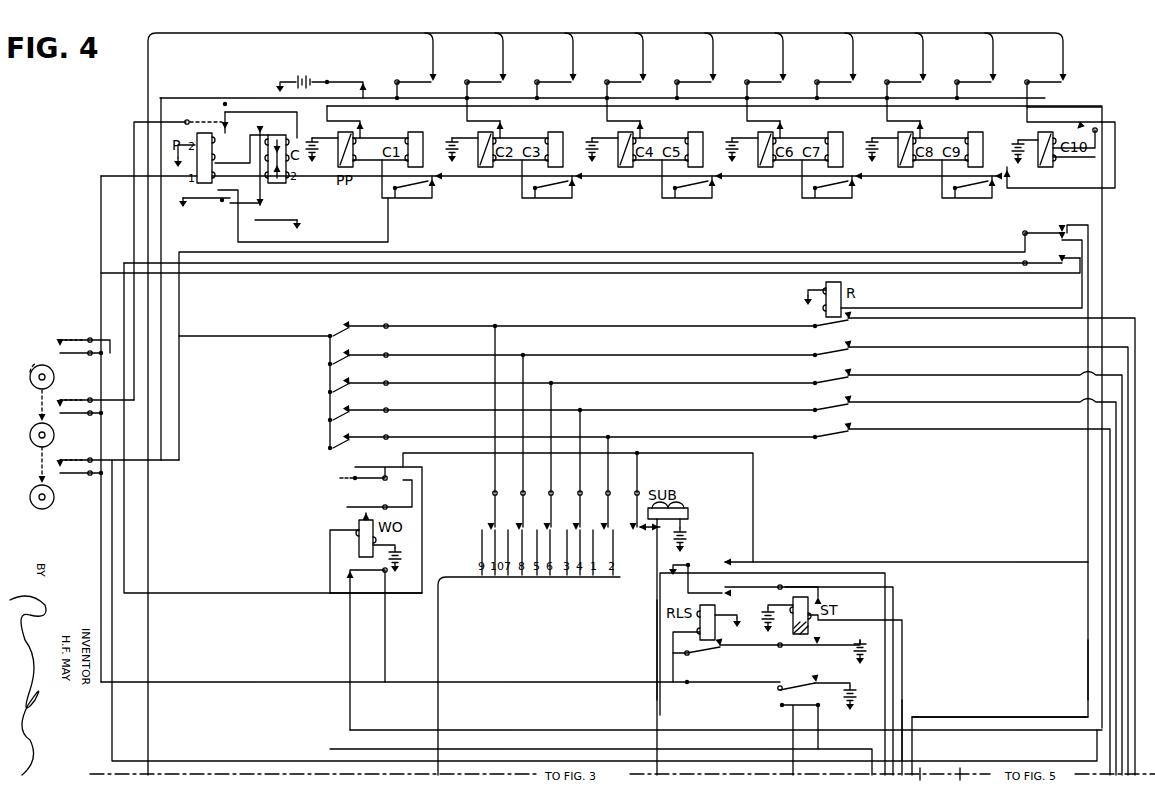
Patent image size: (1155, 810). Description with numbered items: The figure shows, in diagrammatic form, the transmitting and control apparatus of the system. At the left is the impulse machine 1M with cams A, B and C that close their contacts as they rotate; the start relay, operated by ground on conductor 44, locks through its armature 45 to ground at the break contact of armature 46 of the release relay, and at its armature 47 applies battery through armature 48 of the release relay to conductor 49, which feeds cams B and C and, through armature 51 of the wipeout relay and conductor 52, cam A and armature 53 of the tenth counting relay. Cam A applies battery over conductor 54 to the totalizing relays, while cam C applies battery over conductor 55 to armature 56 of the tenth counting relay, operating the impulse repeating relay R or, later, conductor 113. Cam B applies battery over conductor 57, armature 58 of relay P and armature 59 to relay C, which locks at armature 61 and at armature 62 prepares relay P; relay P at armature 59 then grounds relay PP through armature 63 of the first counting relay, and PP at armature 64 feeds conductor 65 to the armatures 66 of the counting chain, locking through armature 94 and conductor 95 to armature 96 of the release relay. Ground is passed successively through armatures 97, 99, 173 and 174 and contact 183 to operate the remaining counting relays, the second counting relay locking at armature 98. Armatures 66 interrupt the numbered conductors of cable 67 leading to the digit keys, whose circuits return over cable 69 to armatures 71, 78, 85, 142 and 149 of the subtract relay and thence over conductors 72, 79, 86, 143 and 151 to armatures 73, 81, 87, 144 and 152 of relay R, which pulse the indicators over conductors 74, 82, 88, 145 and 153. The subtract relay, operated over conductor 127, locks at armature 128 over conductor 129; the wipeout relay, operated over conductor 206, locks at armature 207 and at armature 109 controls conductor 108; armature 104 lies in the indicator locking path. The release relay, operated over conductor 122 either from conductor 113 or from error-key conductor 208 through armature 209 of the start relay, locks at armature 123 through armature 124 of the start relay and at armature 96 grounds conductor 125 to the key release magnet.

The cable 67 is at (150, 68).
The armatures of relays C1 to C10 66 is at (415, 80).
The conductor 65 is at (197, 98).
The conductor 95 is at (413, 108).
The armature of relay PP 64 is at (347, 82).
The conductor 57 is at (132, 148).
The armature of relay P 58 is at (210, 112).
The armature of relay C 62 is at (257, 112).
The armature of relay P 59 is at (208, 198).
The armature of relay C 61 is at (270, 220).
The armature of relay PP 94 is at (352, 121).
The armature of relay C2 98 is at (487, 121).
The armature of relay C1 63 is at (410, 192).
The armature of relay C3 97 is at (550, 192).
The armature of relay C5 99 is at (690, 192).
The armature of relay C7 173 is at (838, 192).
The armature of relay C9 174 is at (975, 192).
The armature of relay G1 104 is at (1064, 114).
The contact 183 is at (1060, 148).
The conductor 52 is at (578, 252).
The conductor 55 is at (925, 252).
The conductor 49 is at (683, 273).
The armature of relay C10 56 is at (1043, 233).
The armature of relay C10 53 is at (1043, 263).
The conductor 72 is at (648, 326).
The conductor 79 is at (648, 355).
The conductor 86 is at (648, 383).
The conductor 143 is at (648, 410).
The conductor 151 is at (648, 437).
The armature of relay R 73 is at (833, 330).
The conductor 74 is at (1015, 318).
The armature of relay R 81 is at (833, 359).
The conductor 82 is at (985, 347).
The armature of relay R 87 is at (833, 387).
The conductor 88 is at (985, 375).
The armature of relay R 144 is at (833, 414).
The conductor 145 is at (983, 402).
The armature of relay R 152 is at (905, 429).
The conductor 153 is at (990, 429).
The conductor 129 is at (753, 500).
The armature of relay SUB 71 is at (488, 510).
The armature of relay SUB 78 is at (512, 533).
The armature of relay SUB 85 is at (540, 533).
The armature of relay SUB 142 is at (568, 533).
The armature of relay SUB 149 is at (598, 533).
The armature of relay SUB 128 is at (626, 510).
The cable 69 is at (441, 638).
The armature of relay WO 51 is at (330, 478).
The armature of relay WO 207 is at (347, 507).
The armature of relay WO 109 is at (368, 570).
The conductor 127 is at (657, 625).
The armature of relay RLS 96 is at (705, 562).
The armature of relay RLS 46 is at (715, 580).
The armature of relay ST 45 is at (820, 585).
The conductor 125 is at (885, 588).
The armature of relay RLS 123 is at (695, 657).
The armature of relay ST 124 is at (790, 645).
The armature of relay RLS 48 is at (728, 688).
The armature of relay ST 47 is at (810, 670).
The conductor 122 is at (657, 690).
The conductor 44 is at (902, 675).
The conductor 113 is at (1088, 665).
The armature of relay ST 209 is at (793, 725).
The conductor 208 is at (834, 740).
The conductor 206 is at (612, 749).
The conductor 108 is at (1040, 728).
The conductor 54 is at (248, 761).
The impulse machine 1M is at (50, 363).